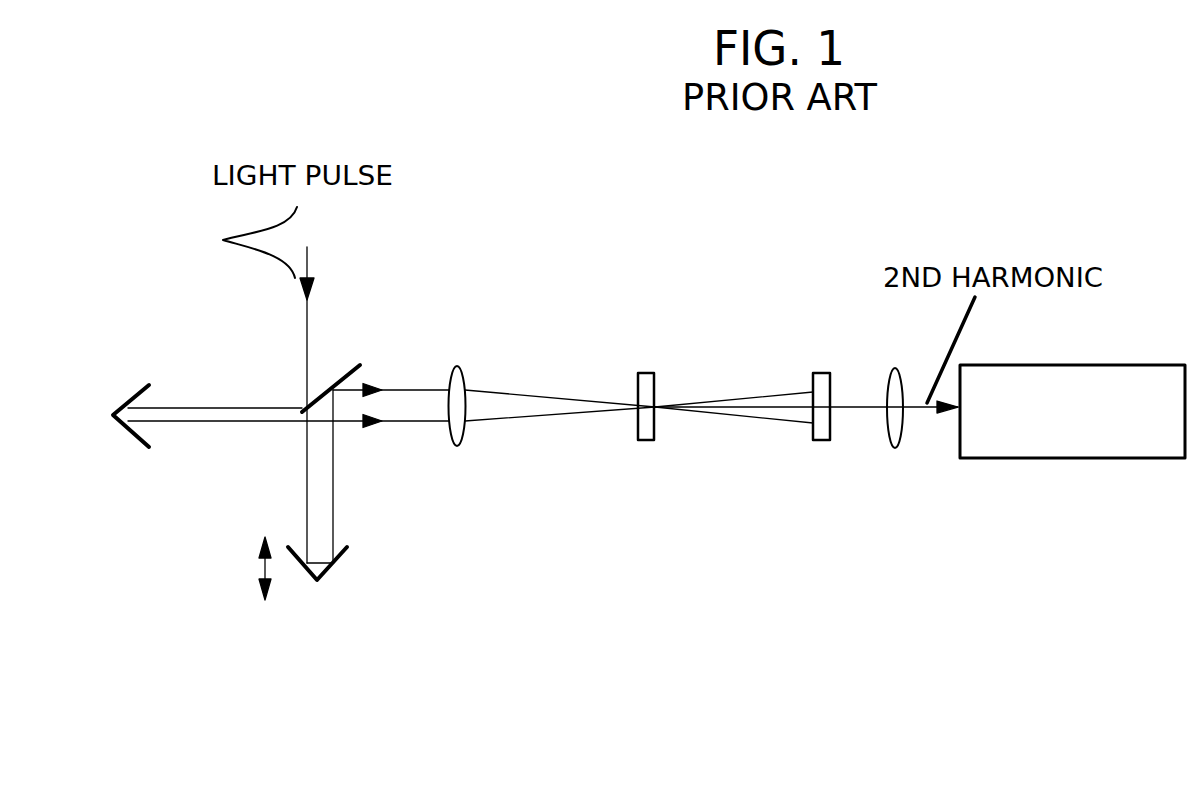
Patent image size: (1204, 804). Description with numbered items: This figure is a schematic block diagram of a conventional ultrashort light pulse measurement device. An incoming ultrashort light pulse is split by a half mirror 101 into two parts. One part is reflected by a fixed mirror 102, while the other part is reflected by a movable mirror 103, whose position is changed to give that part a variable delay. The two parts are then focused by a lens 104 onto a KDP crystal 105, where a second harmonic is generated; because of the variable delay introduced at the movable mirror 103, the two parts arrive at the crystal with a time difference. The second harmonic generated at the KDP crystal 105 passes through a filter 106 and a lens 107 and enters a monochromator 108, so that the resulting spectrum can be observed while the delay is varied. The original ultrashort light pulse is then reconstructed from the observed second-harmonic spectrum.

The half mirror 101 is at (361, 368).
The fixed mirror 102 is at (142, 443).
The movable mirror 103 is at (347, 548).
The lens 104 is at (462, 443).
The KDP crystal 105 is at (637, 427).
The filter 106 is at (811, 437).
The lens 107 is at (886, 436).
The monochromator 108 is at (960, 460).